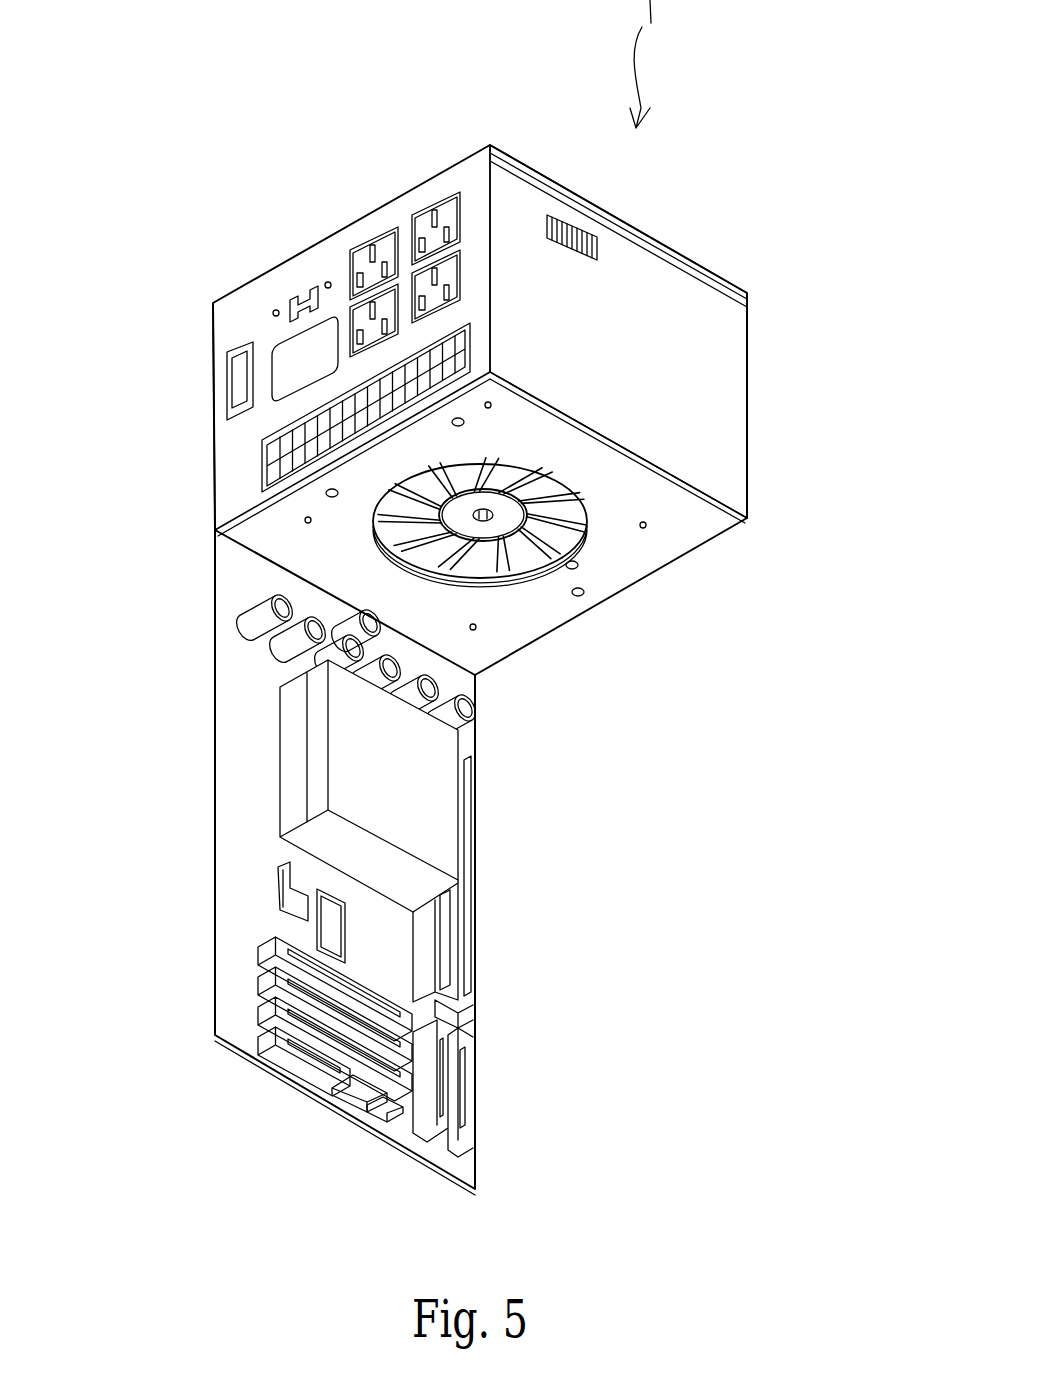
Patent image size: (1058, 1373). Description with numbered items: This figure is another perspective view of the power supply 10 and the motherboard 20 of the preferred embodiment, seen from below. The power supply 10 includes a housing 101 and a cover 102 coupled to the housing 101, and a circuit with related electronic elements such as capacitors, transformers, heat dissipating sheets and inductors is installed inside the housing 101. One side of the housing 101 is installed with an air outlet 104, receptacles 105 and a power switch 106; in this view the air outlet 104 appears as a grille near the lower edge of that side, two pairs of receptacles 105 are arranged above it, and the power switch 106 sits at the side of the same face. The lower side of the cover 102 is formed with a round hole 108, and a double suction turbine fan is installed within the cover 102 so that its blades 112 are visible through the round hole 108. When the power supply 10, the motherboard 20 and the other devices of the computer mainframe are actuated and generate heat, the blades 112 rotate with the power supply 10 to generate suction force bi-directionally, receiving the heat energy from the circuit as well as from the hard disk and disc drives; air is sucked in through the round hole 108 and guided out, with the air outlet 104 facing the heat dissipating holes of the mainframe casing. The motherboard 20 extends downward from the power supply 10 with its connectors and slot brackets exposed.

The power supply 10 is at (753, 423).
The motherboard 20 is at (477, 900).
The housing 101 is at (455, 182).
The cover 102 is at (640, 262).
The air outlet 104 is at (267, 457).
The receptacles 105 is at (363, 248).
The power switch 106 is at (235, 372).
The round hole 108 is at (518, 582).
The blades 112 is at (568, 550).